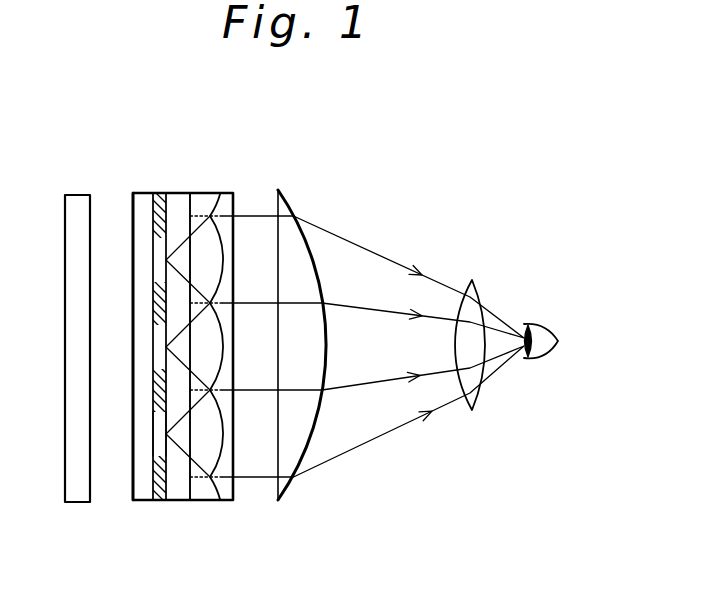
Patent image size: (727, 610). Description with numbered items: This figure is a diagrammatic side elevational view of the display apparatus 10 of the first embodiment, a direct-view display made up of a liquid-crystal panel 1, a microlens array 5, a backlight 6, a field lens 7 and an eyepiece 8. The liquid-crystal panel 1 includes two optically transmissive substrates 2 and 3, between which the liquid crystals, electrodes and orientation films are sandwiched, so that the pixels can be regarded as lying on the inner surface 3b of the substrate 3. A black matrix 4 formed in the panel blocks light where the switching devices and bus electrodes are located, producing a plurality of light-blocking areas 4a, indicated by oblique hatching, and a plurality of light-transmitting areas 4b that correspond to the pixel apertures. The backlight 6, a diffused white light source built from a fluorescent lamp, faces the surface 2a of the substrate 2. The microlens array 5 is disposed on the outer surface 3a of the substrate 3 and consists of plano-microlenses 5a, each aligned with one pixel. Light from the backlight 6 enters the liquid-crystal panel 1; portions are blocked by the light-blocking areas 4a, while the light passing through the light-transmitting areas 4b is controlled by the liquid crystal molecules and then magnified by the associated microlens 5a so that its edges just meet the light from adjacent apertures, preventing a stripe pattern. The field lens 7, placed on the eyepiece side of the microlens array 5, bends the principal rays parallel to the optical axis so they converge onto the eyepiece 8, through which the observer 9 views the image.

The liquid-crystal panel 1 is at (198, 109).
The substrate 2 is at (144, 201).
The surface of substrate 2a is at (132, 233).
The substrate 3 is at (181, 201).
The outer surface of substrate 3a is at (192, 484).
The inner surface of substrate 3b is at (160, 430).
The black matrix 4 is at (160, 201).
The light-blocking areas 4a is at (161, 484).
The light-transmitting areas 4b is at (160, 434).
The microlens array 5 is at (236, 203).
The microlens 5a is at (202, 202).
The backlight 6 is at (77, 497).
The field lens 7 is at (282, 481).
The eyepiece 8 is at (481, 390).
The observer 9 is at (530, 325).
The display apparatus 10 is at (375, 126).